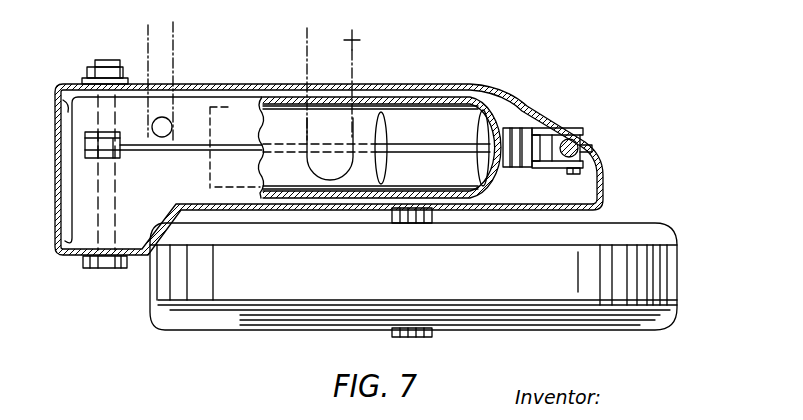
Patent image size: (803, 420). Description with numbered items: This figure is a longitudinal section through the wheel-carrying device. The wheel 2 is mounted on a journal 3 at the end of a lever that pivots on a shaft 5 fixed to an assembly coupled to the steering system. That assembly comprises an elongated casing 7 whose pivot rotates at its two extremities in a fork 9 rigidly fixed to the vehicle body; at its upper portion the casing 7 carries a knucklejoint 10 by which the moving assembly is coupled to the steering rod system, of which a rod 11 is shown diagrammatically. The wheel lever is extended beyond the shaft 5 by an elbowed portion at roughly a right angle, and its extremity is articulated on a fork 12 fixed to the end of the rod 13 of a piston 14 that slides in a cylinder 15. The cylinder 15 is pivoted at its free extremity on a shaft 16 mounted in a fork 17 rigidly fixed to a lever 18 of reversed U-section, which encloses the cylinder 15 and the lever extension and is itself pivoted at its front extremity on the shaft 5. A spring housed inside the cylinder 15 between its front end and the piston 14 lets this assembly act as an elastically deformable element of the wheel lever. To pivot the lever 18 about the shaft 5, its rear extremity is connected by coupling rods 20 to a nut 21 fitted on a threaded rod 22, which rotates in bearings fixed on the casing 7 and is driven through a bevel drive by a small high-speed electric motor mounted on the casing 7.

The wheel 2 is at (558, 312).
The journal 3 is at (438, 216).
The shaft 5 is at (120, 241).
The casing 7 is at (393, 82).
The fork 9 is at (355, 40).
The knucklejoint 10 is at (167, 128).
The rod 11 is at (173, 37).
The fork 12 is at (118, 142).
The rod 13 is at (154, 147).
The piston 14 is at (386, 129).
The cylinder 15 is at (211, 158).
The shaft 16 is at (512, 127).
The fork 17 is at (518, 168).
The lever 18 is at (418, 97).
The coupling rods 20 is at (552, 128).
The nut 21 is at (588, 153).
The threaded rod 22 is at (575, 140).